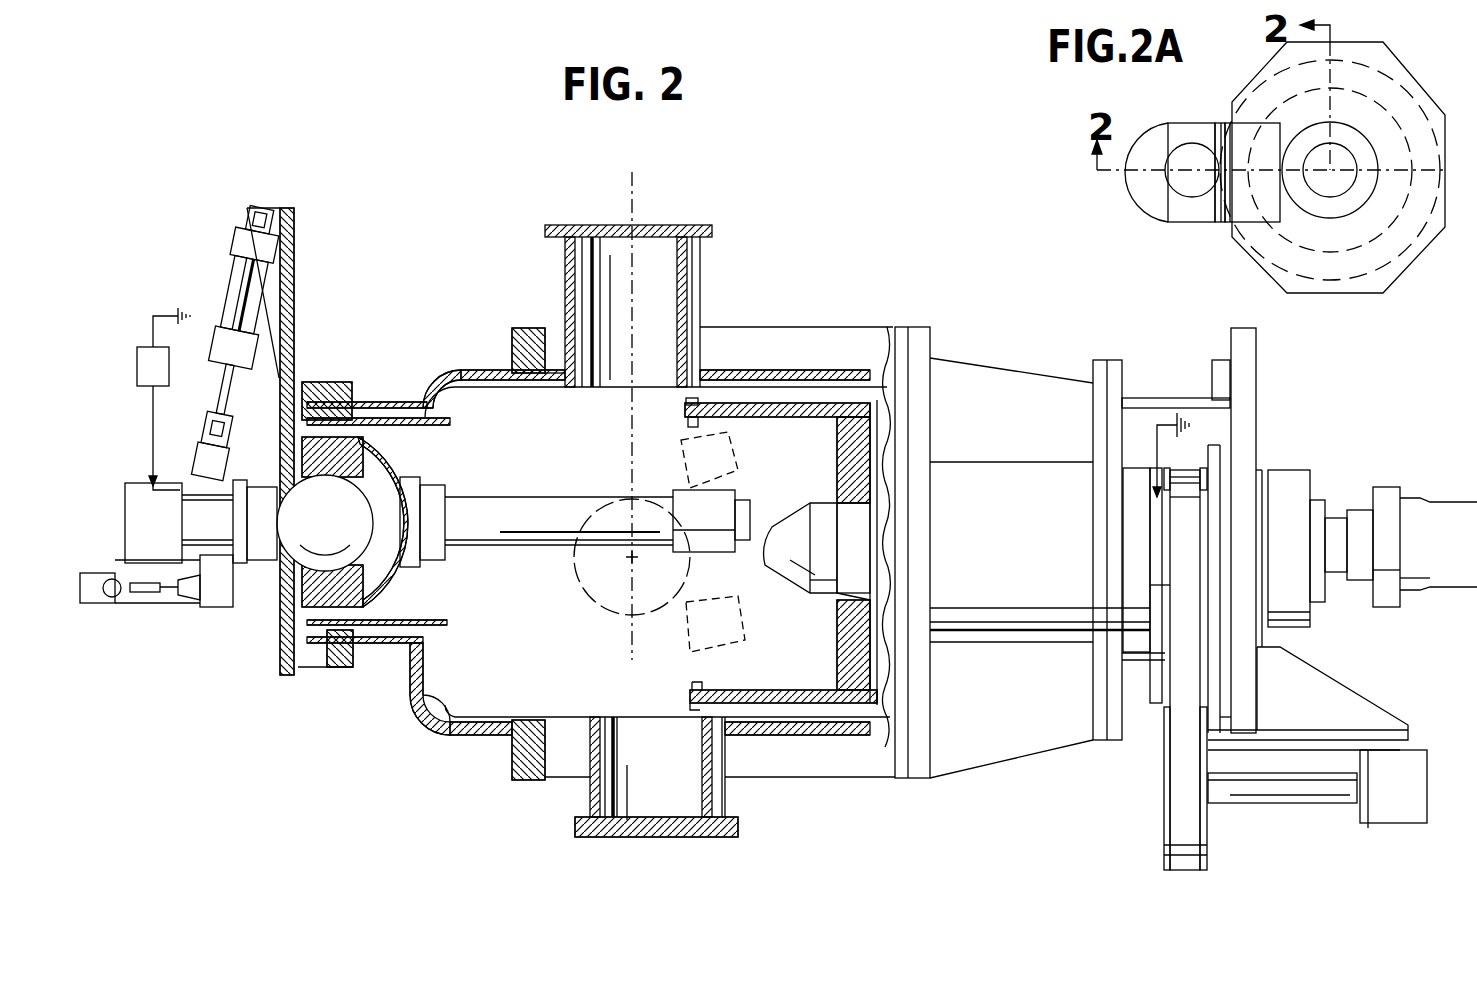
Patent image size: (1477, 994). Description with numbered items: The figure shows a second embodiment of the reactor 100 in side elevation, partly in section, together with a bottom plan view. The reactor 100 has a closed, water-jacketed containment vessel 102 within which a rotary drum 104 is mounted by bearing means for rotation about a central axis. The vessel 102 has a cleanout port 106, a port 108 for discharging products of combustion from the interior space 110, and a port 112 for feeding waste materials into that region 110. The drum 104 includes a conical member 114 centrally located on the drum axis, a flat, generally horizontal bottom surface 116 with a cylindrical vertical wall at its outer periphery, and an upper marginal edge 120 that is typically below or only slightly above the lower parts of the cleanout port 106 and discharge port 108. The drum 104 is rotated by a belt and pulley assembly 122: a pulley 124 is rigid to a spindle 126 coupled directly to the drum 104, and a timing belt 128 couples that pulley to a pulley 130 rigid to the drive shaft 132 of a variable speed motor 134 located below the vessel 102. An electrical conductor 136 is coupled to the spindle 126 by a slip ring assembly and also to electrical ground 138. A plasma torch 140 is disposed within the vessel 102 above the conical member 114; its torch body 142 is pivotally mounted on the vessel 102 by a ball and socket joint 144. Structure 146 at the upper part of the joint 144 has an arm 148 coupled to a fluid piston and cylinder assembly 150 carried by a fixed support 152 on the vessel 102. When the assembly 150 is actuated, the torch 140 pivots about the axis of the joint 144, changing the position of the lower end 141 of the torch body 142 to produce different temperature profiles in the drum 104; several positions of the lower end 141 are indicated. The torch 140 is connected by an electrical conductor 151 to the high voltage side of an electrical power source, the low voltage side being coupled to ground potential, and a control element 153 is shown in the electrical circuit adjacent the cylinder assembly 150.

In FIG. 2, the reactor 100 is at (510, 318).
In FIG. 2A, the reactor 100 is at (1408, 286).
In FIG. 2, the containment vessel 102 is at (466, 380).
In FIG. 2, the rotary drum 104 is at (780, 690).
In FIG. 2, the cleanout port 106 is at (618, 812).
In FIG. 2, the discharge port 108 is at (668, 232).
In FIG. 2, the interior space 110 is at (513, 621).
In FIG. 2, the feed port 112 is at (607, 598).
In FIG. 2, the conical member 114 is at (812, 498).
In FIG. 2, the bottom surface 116 is at (840, 632).
In FIG. 2, the upper marginal edge 120 is at (690, 700).
In FIG. 2, the belt and pulley assembly 122 is at (1122, 669).
In FIG. 2A, the belt and pulley assembly 122 is at (1292, 120).
In FIG. 2, the pulley 124 is at (1190, 470).
In FIG. 2A, the pulley 124 is at (1348, 203).
In FIG. 2, the spindle 126 is at (1160, 540).
In FIG. 2, the timing belt 128 is at (1187, 772).
In FIG. 2A, the timing belt 128 is at (1256, 240).
In FIG. 2, the pulley 130 is at (1165, 818).
In FIG. 2, the drive shaft 132 is at (1262, 800).
In FIG. 2, the variable speed motor 134 is at (1386, 805).
In FIG. 2A, the variable speed motor 134 is at (1150, 197).
In FIG. 2, the electrical conductor 136 is at (1157, 439).
In FIG. 2, the electrical ground 138 is at (1177, 415).
In FIG. 2, the plasma torch 140 is at (678, 498).
In FIG. 2, the lower end 141 is at (738, 462).
In FIG. 2, the torch body 142 is at (509, 497).
In FIG. 2, the ball and socket joint 144 is at (355, 492).
In FIG. 2, the structure 146 is at (260, 490).
In FIG. 2, the arm 148 is at (156, 545).
In FIG. 2, the fluid piston and cylinder assembly 150 is at (225, 288).
In FIG. 2, the electrical conductor 151 is at (153, 439).
In FIG. 2, the fixed support 152 is at (294, 304).
In FIG. 2, the control unit 153 is at (140, 372).